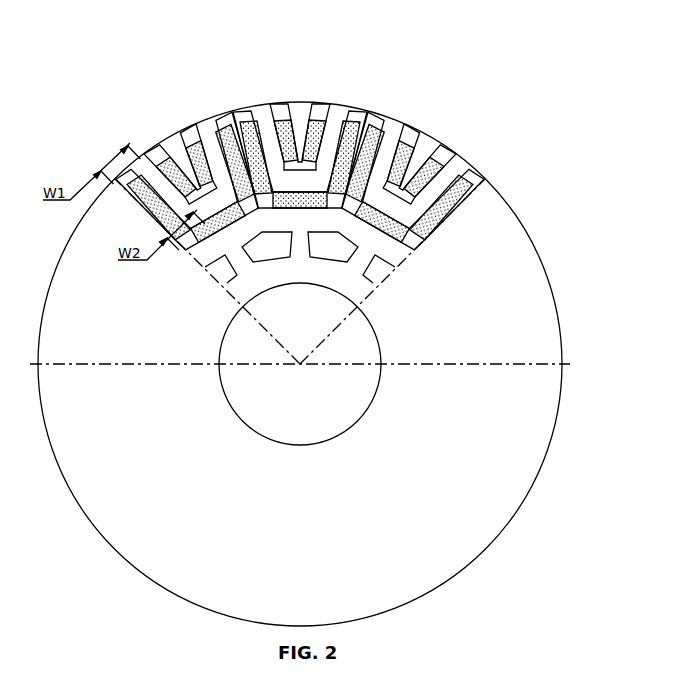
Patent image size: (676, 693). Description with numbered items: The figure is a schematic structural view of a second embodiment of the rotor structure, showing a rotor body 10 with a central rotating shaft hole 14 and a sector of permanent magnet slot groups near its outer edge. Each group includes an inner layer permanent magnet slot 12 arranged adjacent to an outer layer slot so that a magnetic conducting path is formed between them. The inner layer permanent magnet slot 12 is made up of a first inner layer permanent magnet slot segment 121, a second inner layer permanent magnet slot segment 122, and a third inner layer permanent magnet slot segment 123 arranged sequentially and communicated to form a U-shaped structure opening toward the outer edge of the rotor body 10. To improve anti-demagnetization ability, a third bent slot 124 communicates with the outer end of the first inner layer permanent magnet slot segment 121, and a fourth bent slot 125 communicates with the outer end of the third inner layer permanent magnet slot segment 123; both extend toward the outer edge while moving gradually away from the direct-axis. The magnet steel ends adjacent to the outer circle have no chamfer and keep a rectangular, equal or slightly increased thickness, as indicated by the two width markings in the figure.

The rotor body 10 is at (460, 288).
The inner layer permanent magnet slot 12 is at (311, 131).
The rotating shaft hole 14 is at (300, 364).
The first inner layer permanent magnet slot segment 121 is at (256, 114).
The second inner layer permanent magnet slot segment 122 is at (340, 137).
The third inner layer permanent magnet slot segment 123 is at (400, 152).
The third bent slot 124 is at (243, 113).
The fourth bent slot 125 is at (305, 195).